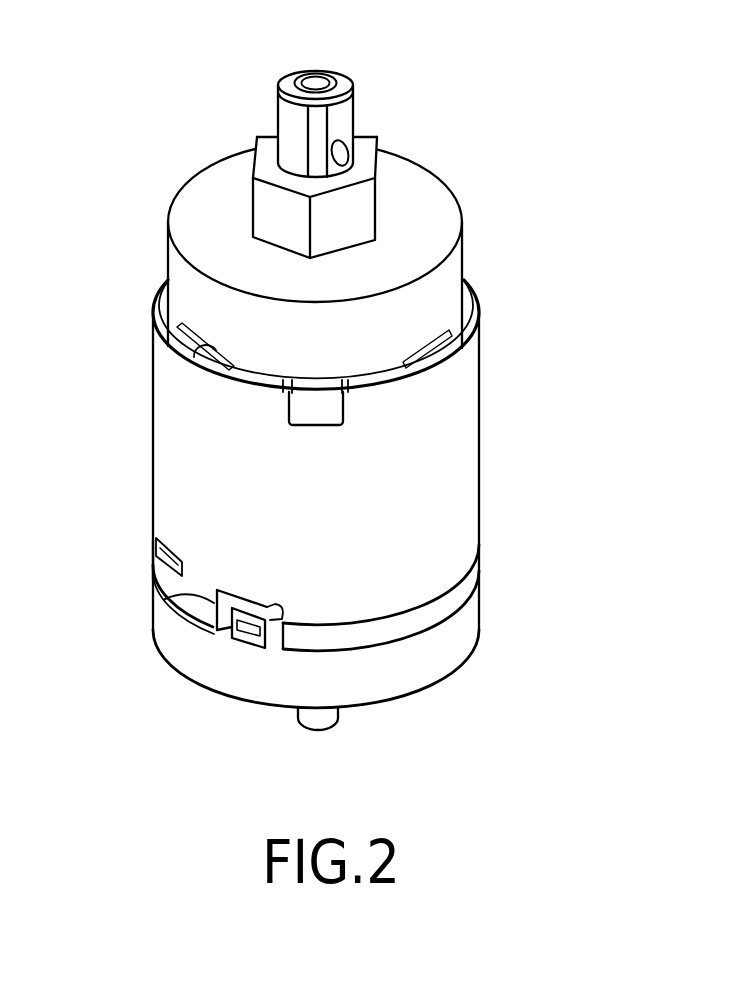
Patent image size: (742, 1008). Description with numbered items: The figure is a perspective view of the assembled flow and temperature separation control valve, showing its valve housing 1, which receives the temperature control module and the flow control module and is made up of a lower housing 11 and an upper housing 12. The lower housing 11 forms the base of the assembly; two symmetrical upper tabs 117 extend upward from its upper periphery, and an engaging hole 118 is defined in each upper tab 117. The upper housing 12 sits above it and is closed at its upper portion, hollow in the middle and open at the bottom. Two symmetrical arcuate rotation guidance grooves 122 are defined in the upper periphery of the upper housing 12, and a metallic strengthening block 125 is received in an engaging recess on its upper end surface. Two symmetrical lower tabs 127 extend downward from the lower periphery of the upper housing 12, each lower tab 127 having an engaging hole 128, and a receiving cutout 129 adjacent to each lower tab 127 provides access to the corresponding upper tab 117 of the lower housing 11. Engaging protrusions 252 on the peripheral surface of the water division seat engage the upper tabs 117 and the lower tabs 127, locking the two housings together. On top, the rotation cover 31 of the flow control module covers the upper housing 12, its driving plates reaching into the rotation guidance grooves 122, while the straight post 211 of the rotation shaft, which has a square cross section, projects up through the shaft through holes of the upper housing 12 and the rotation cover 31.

The valve housing 1 is at (287, 402).
The lower housing 11 is at (444, 658).
The upper housing 12 is at (457, 416).
The upper tab 117 is at (166, 600).
The engaging hole 118 is at (207, 627).
The rotation guidance groove 122 is at (194, 348).
The metallic strengthening block 125 is at (317, 407).
The lower tab 127 is at (153, 560).
The engaging hole 128 is at (284, 620).
The receiving cutout 129 is at (154, 538).
The straight post 211 is at (344, 117).
The engaging protrusion 252 is at (230, 594).
The rotation cover 31 is at (447, 191).